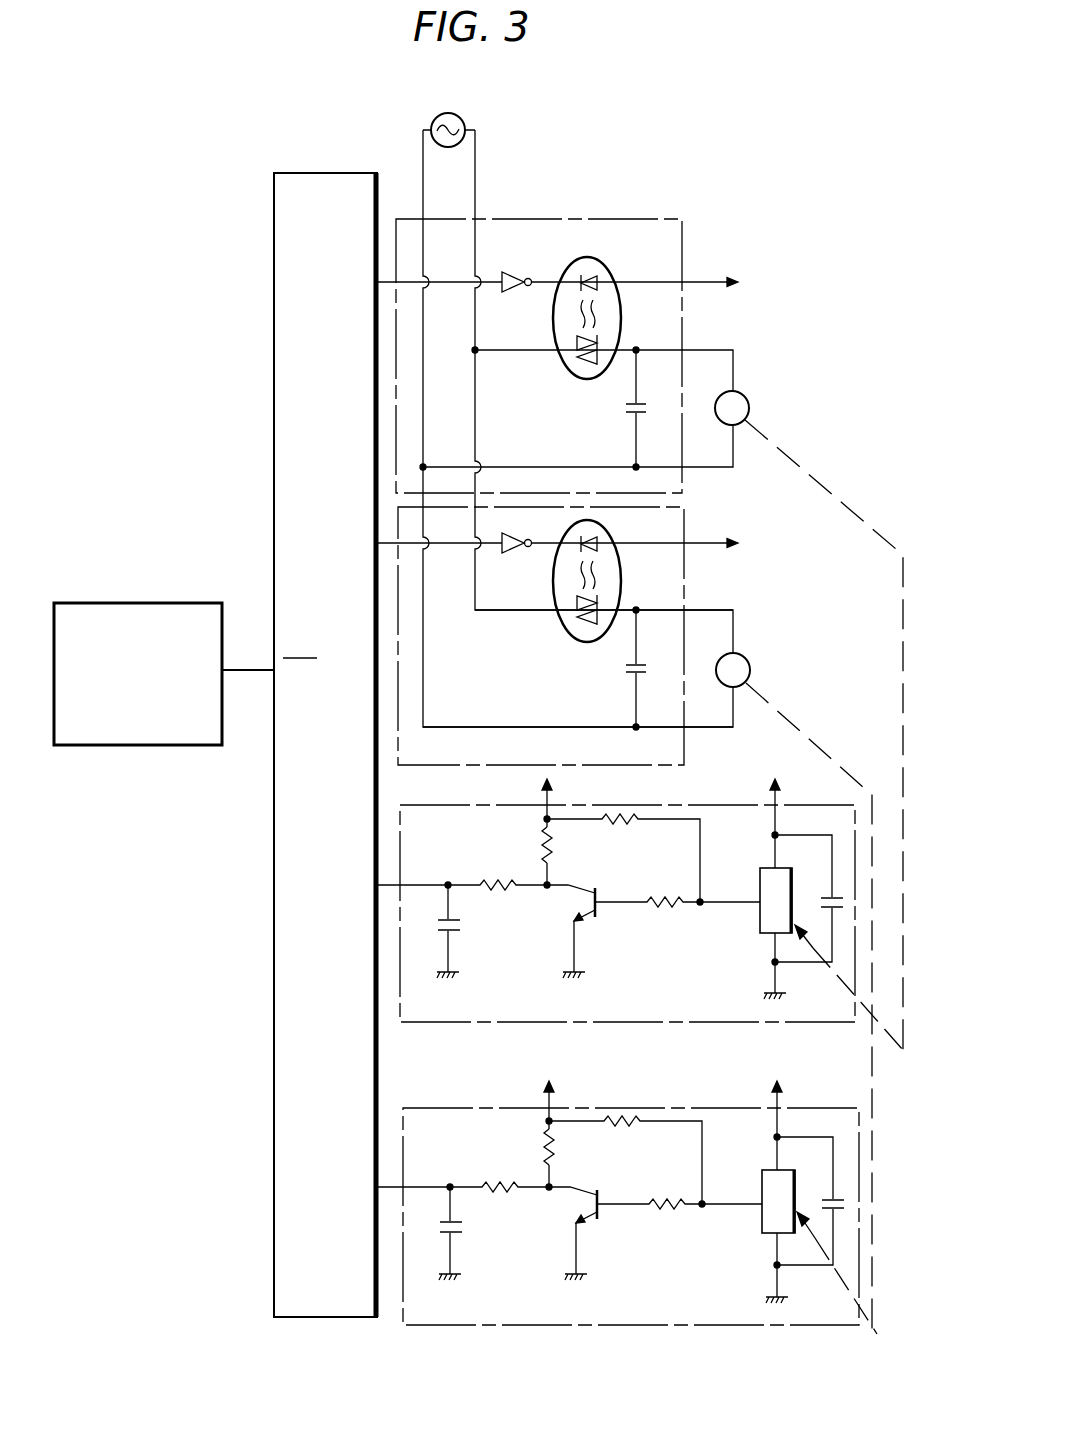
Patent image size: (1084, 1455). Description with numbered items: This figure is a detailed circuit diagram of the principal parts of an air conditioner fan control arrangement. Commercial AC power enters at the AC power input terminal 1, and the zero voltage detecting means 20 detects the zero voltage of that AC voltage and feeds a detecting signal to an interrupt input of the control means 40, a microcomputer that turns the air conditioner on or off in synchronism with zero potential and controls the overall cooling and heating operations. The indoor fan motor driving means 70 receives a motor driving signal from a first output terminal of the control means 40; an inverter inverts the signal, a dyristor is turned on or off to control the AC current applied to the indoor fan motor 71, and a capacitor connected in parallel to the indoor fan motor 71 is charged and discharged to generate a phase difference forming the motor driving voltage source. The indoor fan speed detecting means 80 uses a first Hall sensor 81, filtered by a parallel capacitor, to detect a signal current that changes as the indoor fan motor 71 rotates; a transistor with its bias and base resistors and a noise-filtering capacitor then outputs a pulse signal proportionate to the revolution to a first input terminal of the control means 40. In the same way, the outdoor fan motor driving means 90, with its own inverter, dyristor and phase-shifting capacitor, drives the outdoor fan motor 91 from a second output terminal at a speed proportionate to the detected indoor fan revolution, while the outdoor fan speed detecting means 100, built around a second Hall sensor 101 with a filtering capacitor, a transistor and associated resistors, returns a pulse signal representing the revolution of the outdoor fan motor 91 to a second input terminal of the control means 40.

The AC power input terminal 1 is at (462, 120).
The zero voltage detecting means 20 is at (164, 700).
The control means 40 is at (363, 172).
The indoor fan motor driving means 70 is at (660, 218).
The indoor fan motor 71 is at (750, 404).
The indoor fan speed detecting means 80 is at (855, 808).
The first Hall sensor 81 is at (770, 868).
The outdoor fan motor driving means 90 is at (690, 516).
The outdoor fan motor 91 is at (751, 667).
The outdoor fan speed detecting means 100 is at (860, 1118).
The second Hall sensor 101 is at (772, 1170).